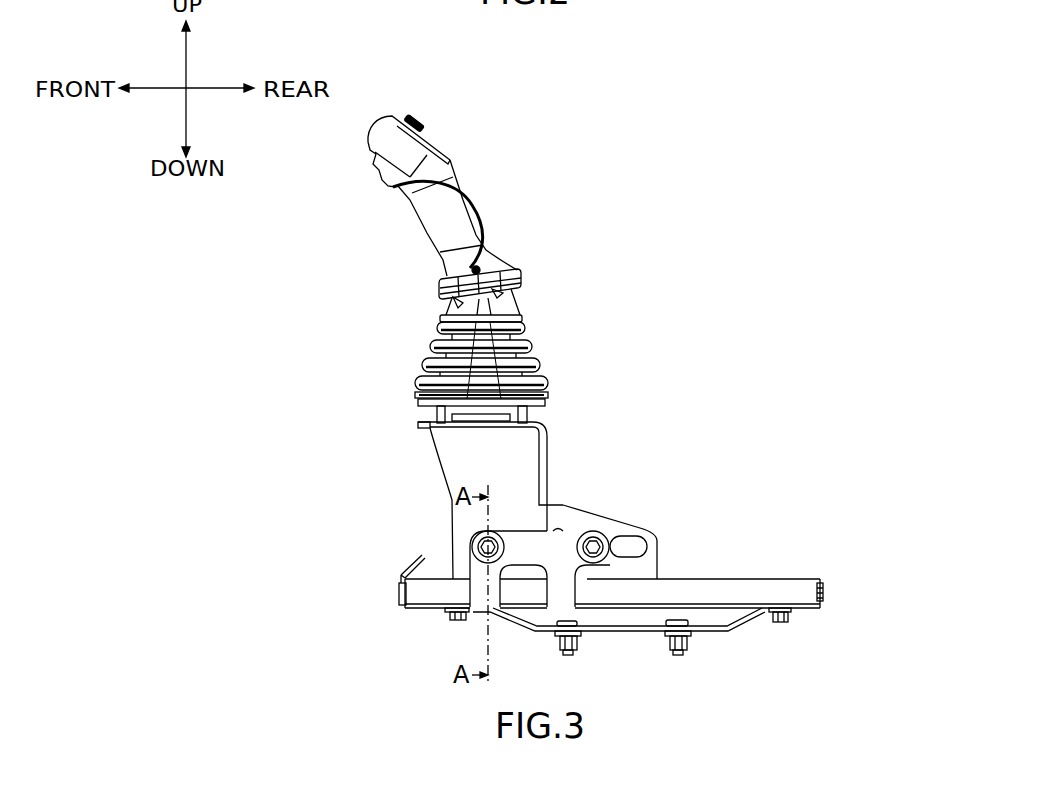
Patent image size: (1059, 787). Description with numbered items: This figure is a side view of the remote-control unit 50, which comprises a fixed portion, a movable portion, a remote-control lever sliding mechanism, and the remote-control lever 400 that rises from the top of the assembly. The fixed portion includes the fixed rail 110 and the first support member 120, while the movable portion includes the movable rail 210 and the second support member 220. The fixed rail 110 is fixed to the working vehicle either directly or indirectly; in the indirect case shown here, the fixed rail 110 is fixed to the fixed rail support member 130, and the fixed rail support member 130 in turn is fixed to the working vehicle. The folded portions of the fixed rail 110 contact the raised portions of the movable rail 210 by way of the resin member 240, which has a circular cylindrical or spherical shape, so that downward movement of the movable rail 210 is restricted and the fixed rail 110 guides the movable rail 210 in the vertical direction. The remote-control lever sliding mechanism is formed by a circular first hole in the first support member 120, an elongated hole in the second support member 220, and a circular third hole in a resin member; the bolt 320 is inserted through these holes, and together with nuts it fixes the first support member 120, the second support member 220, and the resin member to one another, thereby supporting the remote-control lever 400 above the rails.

The remote-control unit 50 is at (738, 152).
The remote-control lever 400 is at (476, 191).
The resin member 240 is at (545, 424).
The second support member 220 is at (605, 516).
The bolt 320 is at (603, 538).
The movable rail 210 is at (772, 578).
The fixed rail 110 is at (824, 594).
The first support member 120 is at (480, 589).
The fixed rail support member 130 is at (712, 632).